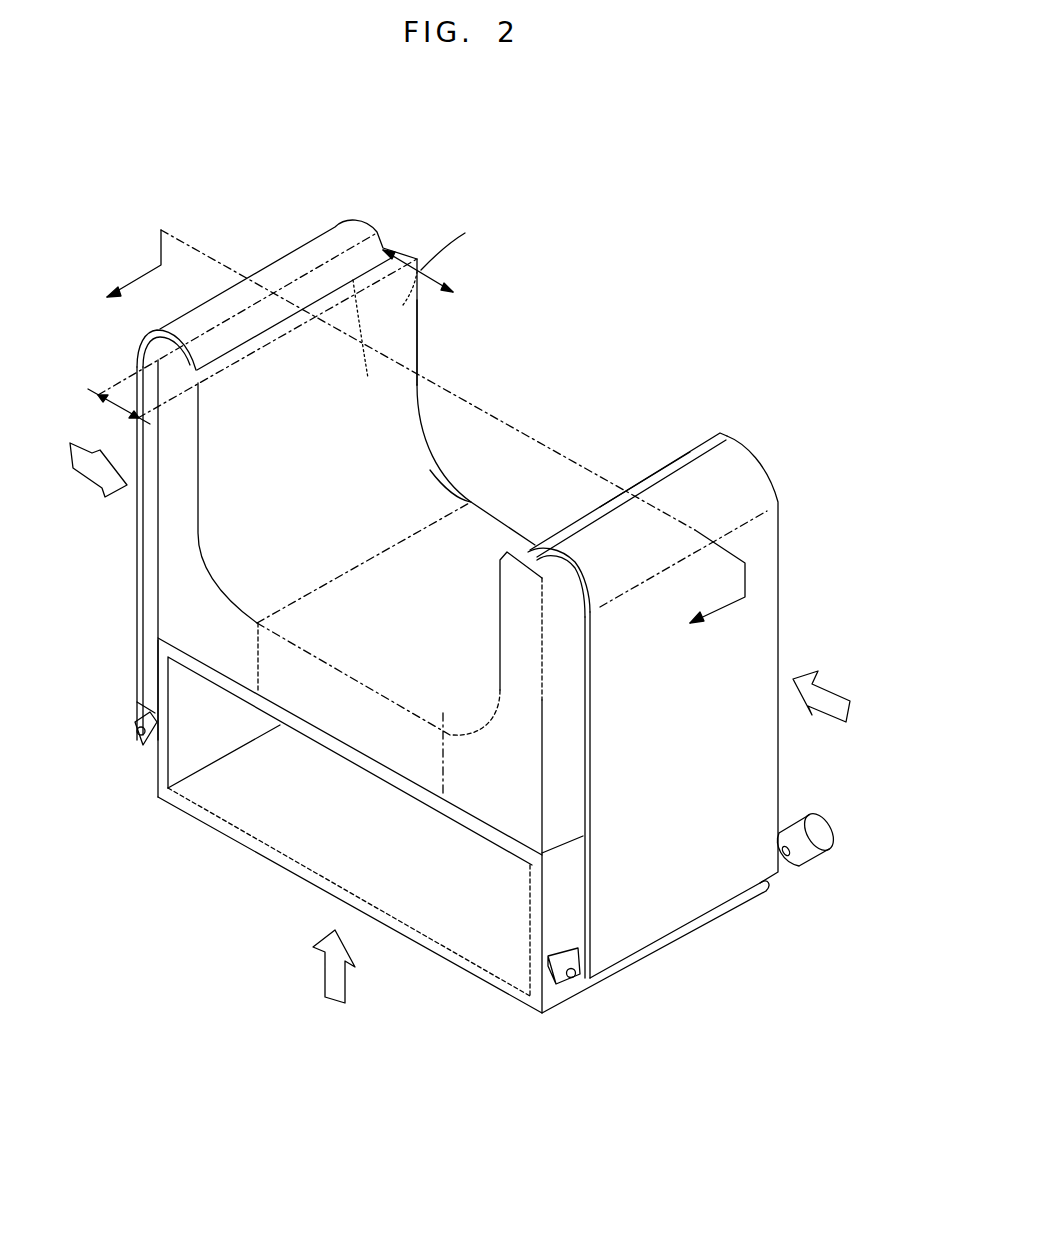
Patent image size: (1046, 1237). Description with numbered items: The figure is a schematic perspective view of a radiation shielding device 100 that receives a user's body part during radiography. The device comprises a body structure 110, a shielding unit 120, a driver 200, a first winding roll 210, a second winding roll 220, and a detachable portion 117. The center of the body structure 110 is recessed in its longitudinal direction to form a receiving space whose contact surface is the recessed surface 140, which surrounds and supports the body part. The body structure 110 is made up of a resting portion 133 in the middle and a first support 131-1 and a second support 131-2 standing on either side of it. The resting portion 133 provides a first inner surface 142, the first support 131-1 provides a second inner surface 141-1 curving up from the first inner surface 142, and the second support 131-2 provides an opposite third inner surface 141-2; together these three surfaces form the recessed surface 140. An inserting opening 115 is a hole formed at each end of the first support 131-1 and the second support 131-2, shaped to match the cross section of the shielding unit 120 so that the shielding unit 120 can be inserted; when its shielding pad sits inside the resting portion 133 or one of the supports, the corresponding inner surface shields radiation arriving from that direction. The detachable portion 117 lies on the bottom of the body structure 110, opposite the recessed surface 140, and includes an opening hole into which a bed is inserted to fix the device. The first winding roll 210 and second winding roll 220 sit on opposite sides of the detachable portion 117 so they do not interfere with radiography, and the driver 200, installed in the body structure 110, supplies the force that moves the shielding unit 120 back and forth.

The radiation shielding device 100 is at (683, 243).
The body structure 110 is at (830, 940).
The inserting opening 115 is at (353, 280).
The detachable portion 117 is at (418, 798).
The shielding unit 120 is at (770, 567).
The first support 131-1 is at (193, 618).
The second support 131-2 is at (498, 795).
The resting portion 133 is at (326, 708).
The recessed surface 140 is at (497, 302).
The second inner surface 141-1 is at (423, 372).
The third inner surface 141-2 is at (582, 510).
The first inner surface 142 is at (490, 535).
The driver 200 is at (818, 826).
The first winding roll 210 is at (573, 993).
The second winding roll 220 is at (135, 703).